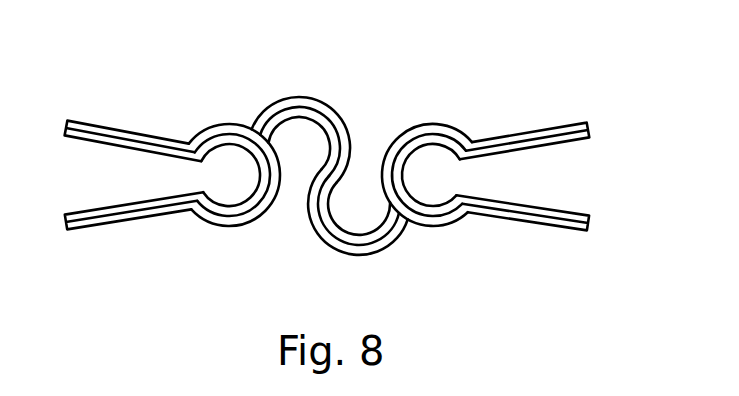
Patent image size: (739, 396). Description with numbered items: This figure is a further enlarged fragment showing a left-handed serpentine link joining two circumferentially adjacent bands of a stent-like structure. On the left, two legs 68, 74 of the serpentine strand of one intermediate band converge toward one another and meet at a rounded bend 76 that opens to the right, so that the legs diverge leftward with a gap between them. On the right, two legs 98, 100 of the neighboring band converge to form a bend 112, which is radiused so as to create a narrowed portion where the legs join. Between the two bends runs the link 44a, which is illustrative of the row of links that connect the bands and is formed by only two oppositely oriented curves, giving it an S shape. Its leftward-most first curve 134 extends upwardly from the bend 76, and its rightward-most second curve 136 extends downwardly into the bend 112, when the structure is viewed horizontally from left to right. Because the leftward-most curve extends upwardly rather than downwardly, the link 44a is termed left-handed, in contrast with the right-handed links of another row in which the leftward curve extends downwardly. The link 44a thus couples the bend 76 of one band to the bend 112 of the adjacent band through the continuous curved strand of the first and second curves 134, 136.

The link 44a is at (330, 180).
The leg 68 is at (143, 151).
The leg 74 is at (121, 227).
The bend 76 is at (251, 222).
The leg 98 is at (510, 151).
The leg 100 is at (545, 225).
The bend 112 is at (433, 227).
The first curve 134 is at (327, 107).
The second curve 136 is at (358, 257).